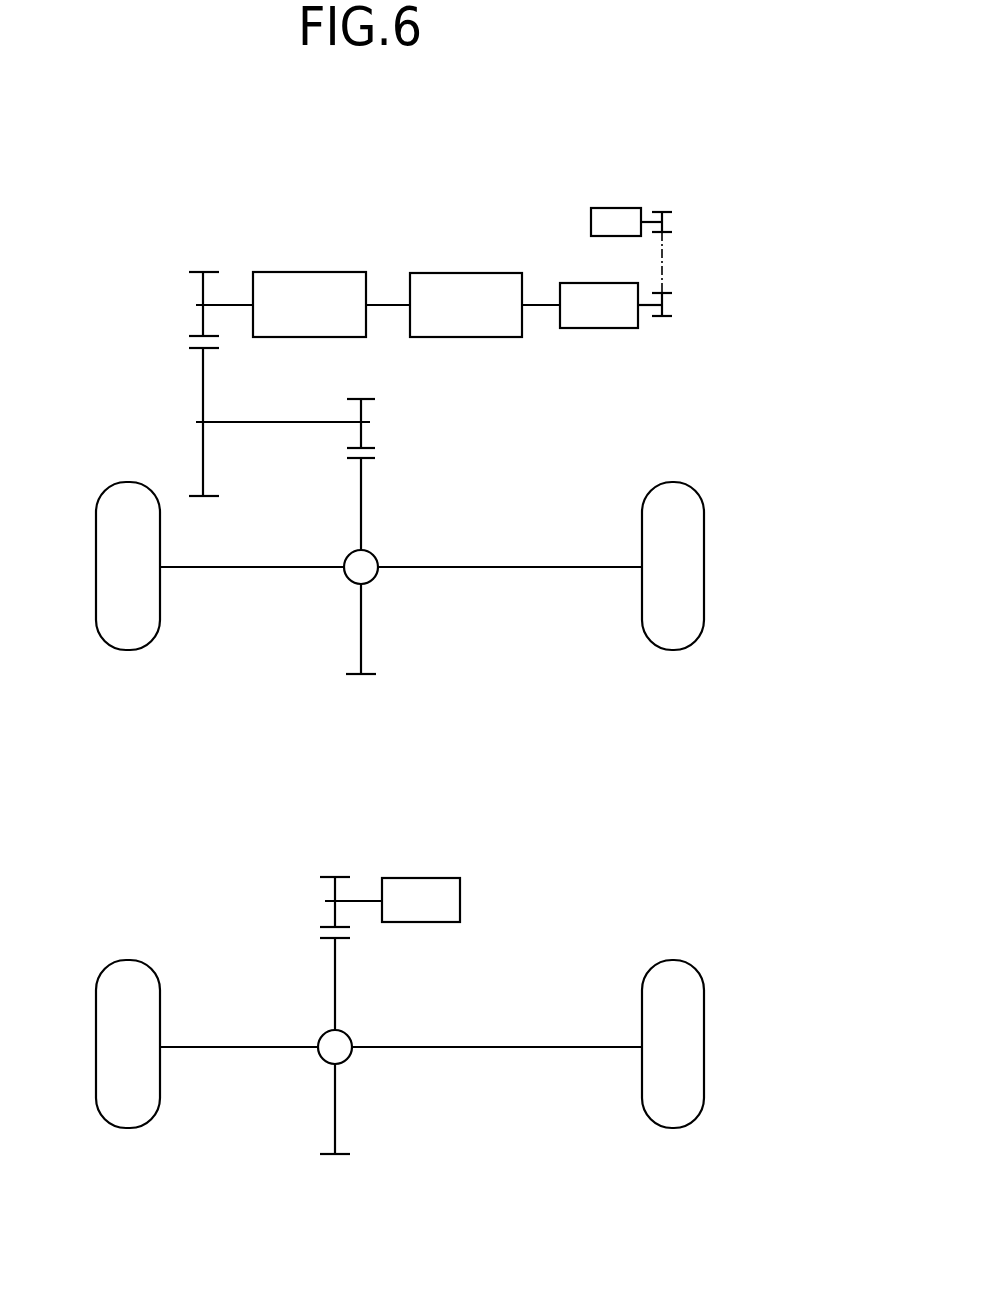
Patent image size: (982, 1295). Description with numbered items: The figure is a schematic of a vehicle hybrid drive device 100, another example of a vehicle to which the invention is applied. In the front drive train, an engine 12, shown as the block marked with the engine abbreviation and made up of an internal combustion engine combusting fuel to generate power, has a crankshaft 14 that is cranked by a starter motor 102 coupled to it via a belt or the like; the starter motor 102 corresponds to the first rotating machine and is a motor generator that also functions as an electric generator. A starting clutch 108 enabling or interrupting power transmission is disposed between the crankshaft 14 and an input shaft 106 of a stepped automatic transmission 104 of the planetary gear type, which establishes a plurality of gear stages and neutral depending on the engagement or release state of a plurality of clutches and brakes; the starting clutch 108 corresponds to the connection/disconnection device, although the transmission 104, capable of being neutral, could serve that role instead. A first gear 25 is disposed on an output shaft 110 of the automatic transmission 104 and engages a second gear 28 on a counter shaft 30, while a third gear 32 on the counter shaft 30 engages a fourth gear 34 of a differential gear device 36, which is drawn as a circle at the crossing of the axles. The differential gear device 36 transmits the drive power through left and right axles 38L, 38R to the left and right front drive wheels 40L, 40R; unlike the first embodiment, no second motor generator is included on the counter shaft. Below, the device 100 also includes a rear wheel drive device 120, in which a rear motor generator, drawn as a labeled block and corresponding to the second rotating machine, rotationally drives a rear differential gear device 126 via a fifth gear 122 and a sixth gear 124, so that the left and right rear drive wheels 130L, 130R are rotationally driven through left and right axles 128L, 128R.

The vehicle hybrid drive device 100 is at (198, 148).
The engine 12 is at (599, 323).
The crankshaft 14 is at (538, 302).
The starter motor 102 is at (616, 216).
The starting clutch 108 is at (466, 280).
The input shaft 106 is at (387, 302).
The stepped automatic transmission 104 is at (310, 283).
The output shaft 110 is at (232, 302).
The first gear 25 is at (200, 268).
The second gear 28 is at (208, 499).
The counter shaft 30 is at (278, 425).
The third gear 32 is at (364, 397).
The fourth gear 34 is at (366, 677).
The differential gear device 36 is at (357, 562).
The left axle 38L is at (253, 570).
The right axle 38R is at (513, 570).
The left front drive wheel 40L is at (134, 634).
The right front drive wheel 40R is at (674, 634).
The rear wheel drive device 120 is at (568, 887).
The fifth gear 122 is at (332, 873).
The sixth gear 124 is at (340, 1157).
The differential gear device 126 is at (332, 1042).
The left axle 128L is at (228, 1050).
The right axle 128R is at (489, 1050).
The left rear drive wheel 130L is at (134, 1114).
The right rear drive wheel 130R is at (674, 1114).